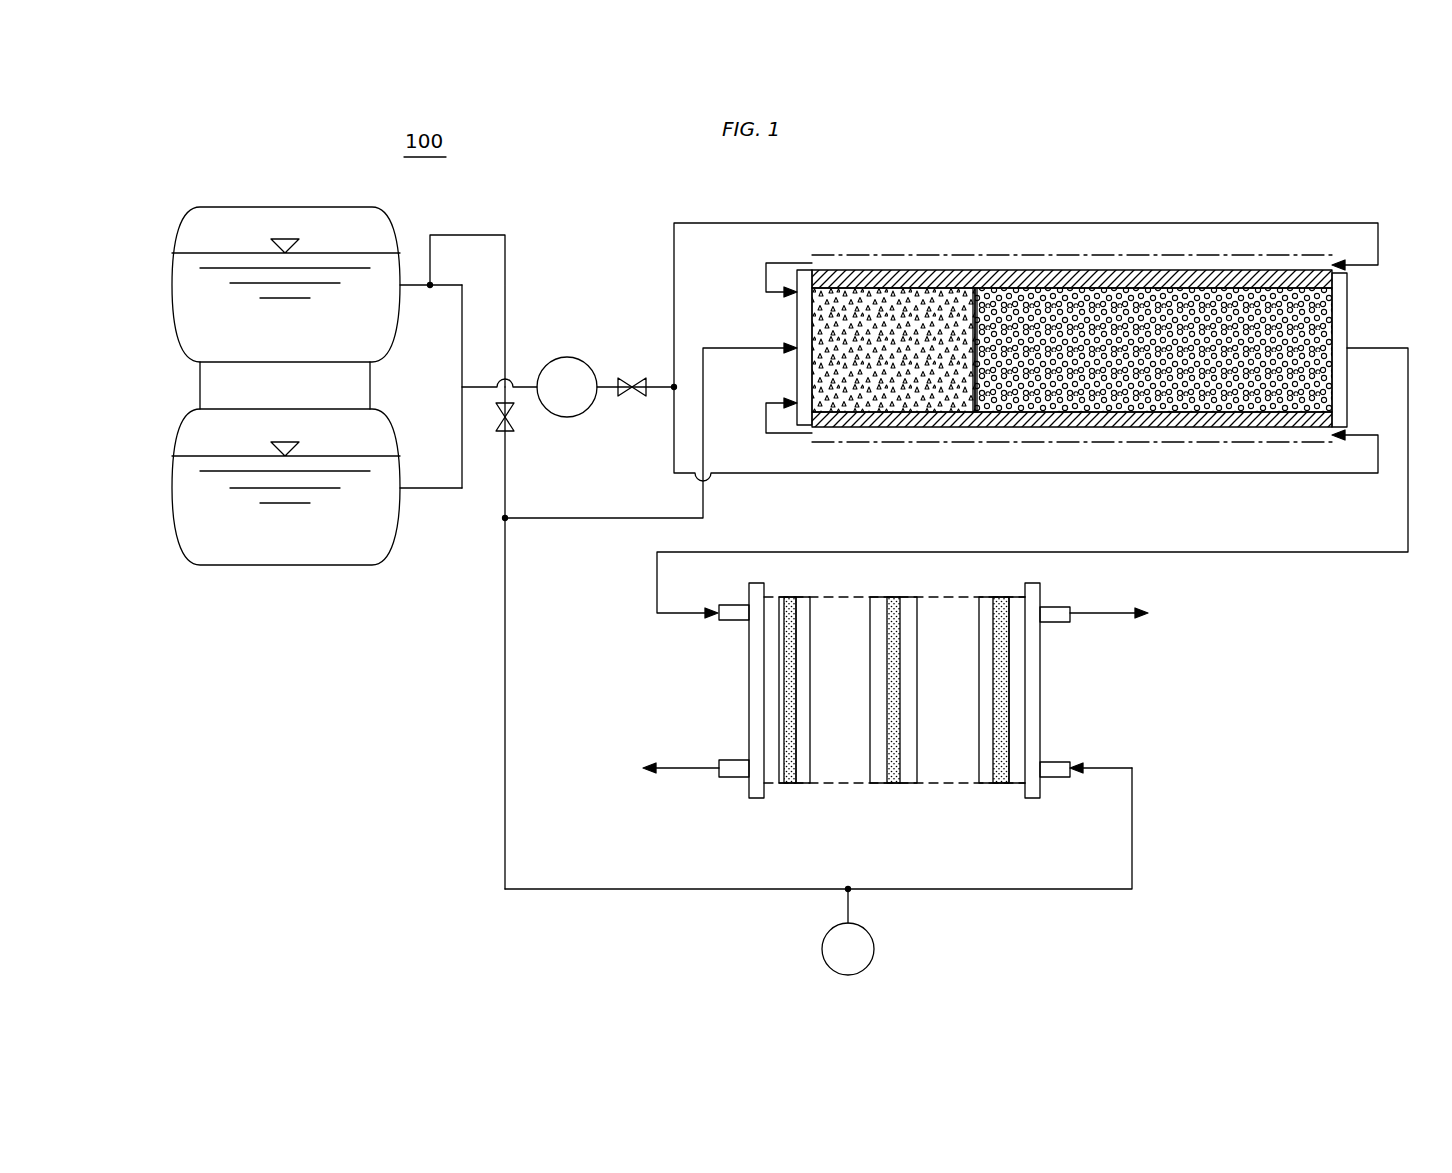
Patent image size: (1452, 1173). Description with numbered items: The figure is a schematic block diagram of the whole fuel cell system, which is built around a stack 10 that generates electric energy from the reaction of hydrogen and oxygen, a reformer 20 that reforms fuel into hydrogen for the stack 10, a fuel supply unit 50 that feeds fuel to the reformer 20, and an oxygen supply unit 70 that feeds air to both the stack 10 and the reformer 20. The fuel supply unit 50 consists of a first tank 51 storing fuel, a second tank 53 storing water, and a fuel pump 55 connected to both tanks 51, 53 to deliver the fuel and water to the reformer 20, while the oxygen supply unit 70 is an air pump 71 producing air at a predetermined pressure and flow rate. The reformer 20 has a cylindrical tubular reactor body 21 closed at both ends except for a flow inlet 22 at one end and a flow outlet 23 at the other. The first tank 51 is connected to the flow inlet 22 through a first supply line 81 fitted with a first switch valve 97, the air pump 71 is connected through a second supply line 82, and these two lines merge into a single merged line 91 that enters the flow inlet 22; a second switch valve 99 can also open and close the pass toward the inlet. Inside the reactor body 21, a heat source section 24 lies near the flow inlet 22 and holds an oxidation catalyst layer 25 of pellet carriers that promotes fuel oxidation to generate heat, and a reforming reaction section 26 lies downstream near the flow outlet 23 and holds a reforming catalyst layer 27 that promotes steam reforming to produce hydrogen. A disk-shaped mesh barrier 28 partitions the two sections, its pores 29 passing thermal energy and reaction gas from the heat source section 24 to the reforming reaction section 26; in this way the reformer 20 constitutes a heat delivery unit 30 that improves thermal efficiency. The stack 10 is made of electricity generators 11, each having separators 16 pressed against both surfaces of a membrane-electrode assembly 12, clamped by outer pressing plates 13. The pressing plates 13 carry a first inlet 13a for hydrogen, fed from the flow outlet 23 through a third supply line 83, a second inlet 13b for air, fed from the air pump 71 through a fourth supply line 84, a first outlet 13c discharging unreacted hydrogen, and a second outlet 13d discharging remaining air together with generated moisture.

The stack 10 is at (905, 719).
The electricity generator 11 is at (902, 737).
The membrane-electrode assembly 12 is at (893, 783).
The pressing plates 13 is at (749, 693).
The first inlet 13a is at (735, 605).
The second inlet 13b is at (1058, 777).
The first outlet 13c is at (1058, 607).
The second outlet 13d is at (733, 777).
The separators 16 is at (870, 783).
The reformer 20 is at (1043, 341).
The tubular reactor body 21 is at (950, 285).
The flow inlet 22 is at (805, 318).
The flow outlet 23 is at (1347, 316).
The heat source section 24 is at (903, 283).
The oxidation catalyst layer 25 is at (855, 296).
The reforming reaction section 26 is at (1193, 290).
The reforming catalyst layer 27 is at (1085, 290).
The barrier 28 is at (975, 288).
The pores 29 is at (958, 412).
The heat delivery unit 30 is at (1262, 252).
The fuel supply unit 50 is at (233, 606).
The first tank 51 is at (292, 207).
The second tank 53 is at (284, 565).
The fuel pump 55 is at (567, 357).
The oxygen supply unit 70 is at (833, 932).
The air pump 71 is at (874, 947).
The first supply line 81 is at (474, 235).
The second supply line 82 is at (505, 707).
The third supply line 83 is at (1032, 552).
The fourth supply line 84 is at (1003, 889).
The merged line 91 is at (703, 505).
The first switch valve 97 is at (505, 431).
The second switch valve 99 is at (632, 378).